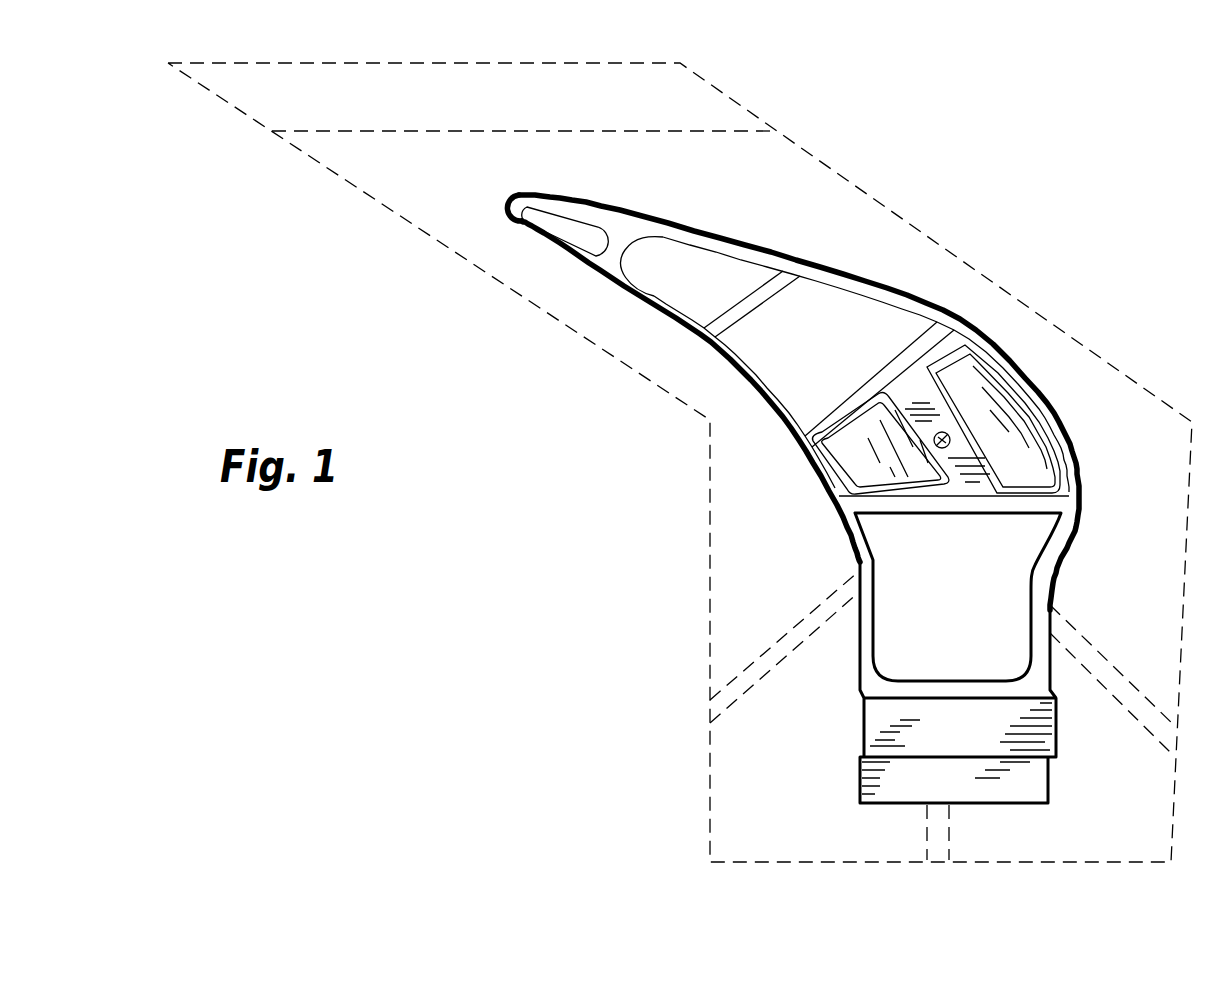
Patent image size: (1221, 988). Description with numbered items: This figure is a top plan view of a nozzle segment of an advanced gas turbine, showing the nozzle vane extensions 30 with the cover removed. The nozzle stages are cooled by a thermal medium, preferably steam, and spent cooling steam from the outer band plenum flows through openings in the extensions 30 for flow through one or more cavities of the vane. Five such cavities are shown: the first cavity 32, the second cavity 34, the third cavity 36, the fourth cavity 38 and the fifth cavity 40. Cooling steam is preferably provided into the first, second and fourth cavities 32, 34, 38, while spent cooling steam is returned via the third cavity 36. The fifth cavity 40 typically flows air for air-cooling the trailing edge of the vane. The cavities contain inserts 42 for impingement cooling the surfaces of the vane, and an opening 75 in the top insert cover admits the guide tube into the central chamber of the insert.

The extensions 30 is at (903, 307).
The first cavity 32 is at (938, 604).
The second cavity 34 is at (963, 377).
The third cavity 36 is at (801, 352).
The fourth cavity 38 is at (698, 263).
The fifth cavity 40 is at (580, 233).
The inserts 42 is at (1045, 473).
The opening 75 is at (948, 452).